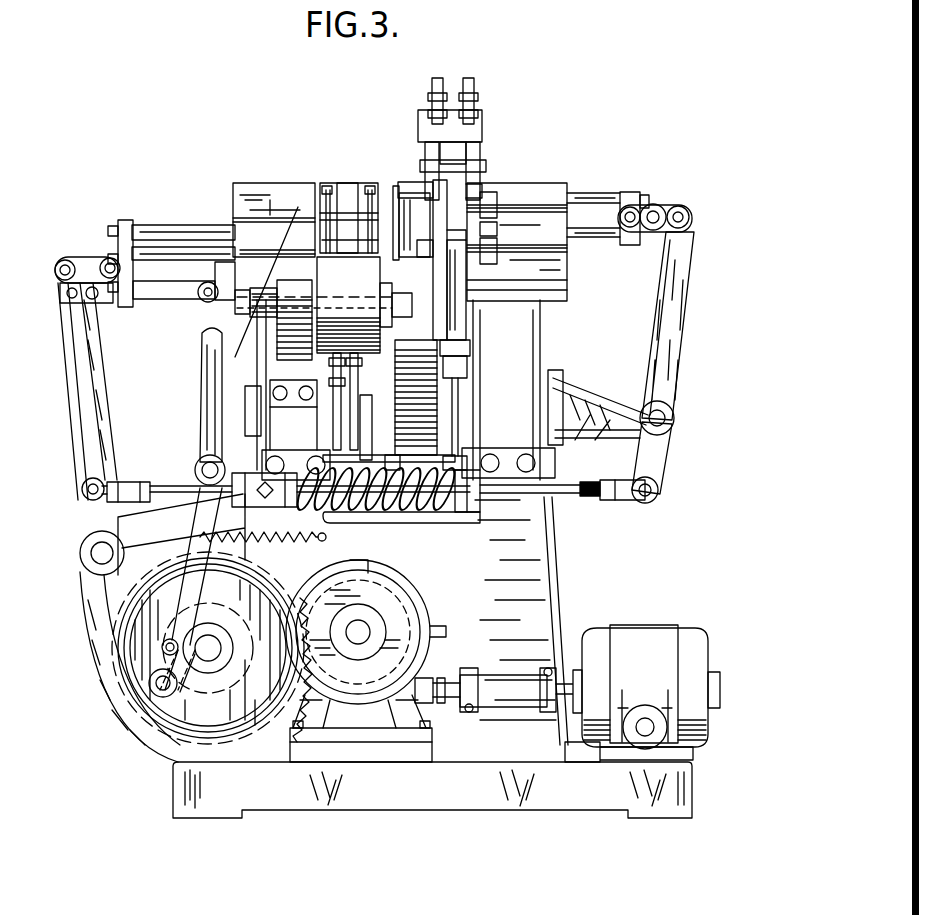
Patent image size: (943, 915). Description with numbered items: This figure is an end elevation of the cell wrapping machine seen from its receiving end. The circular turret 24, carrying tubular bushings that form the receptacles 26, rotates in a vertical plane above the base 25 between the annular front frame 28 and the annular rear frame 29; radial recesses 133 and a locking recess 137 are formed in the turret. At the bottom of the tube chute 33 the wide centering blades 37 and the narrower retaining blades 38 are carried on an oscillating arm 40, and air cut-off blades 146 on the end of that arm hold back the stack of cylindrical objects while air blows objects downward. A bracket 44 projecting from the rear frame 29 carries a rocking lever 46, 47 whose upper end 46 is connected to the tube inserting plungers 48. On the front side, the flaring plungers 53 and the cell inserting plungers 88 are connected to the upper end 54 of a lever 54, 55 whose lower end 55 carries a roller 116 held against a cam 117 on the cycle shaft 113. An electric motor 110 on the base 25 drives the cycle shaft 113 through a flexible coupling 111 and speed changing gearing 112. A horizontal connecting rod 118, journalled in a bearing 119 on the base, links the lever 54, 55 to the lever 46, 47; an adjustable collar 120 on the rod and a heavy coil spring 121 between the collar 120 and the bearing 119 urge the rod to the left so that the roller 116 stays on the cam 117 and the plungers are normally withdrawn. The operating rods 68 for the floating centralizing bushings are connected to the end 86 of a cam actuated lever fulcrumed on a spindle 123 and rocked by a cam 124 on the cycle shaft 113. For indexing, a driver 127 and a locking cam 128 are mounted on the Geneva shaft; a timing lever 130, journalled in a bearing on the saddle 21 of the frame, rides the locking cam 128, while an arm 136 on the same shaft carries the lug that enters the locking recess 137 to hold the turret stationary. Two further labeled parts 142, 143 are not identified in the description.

The saddle 21 is at (418, 516).
The turret 24 is at (410, 183).
The base 25 is at (488, 766).
The receptacles 26 is at (381, 337).
The annular front frame 28 is at (293, 410).
The annular rear frame 29 is at (518, 343).
The tube chute 33 is at (455, 118).
The centering blades 37 is at (480, 233).
The retaining blades 38 is at (477, 205).
The arm 40 is at (453, 320).
The bracket 44 is at (598, 397).
The upper end of rocking lever 46 is at (668, 352).
The rocking lever 47 is at (664, 464).
The tube inserting plungers 48 is at (605, 200).
The flaring plungers 53 is at (198, 250).
The upper end of rocking lever 54 is at (80, 394).
The lower end of rocking lever 55 is at (102, 613).
The operating rods 68 is at (252, 306).
The end of cam actuated lever 86 is at (205, 391).
The cell inserting plungers 88 is at (150, 290).
The electric motor 110 is at (648, 652).
The flexible coupling 111 is at (512, 692).
The speed changing gearing 112 is at (405, 680).
The cycle shaft 113 is at (212, 648).
The roller 116 is at (134, 716).
The cam 117 is at (150, 735).
The connecting rod 118 is at (176, 476).
The bearing 119 is at (471, 515).
The adjustable collar 120 is at (255, 477).
The coil spring 121 is at (358, 512).
The spindle 123 is at (202, 460).
The cam 124 is at (182, 748).
The driver 127 is at (386, 386).
The locking cam 128 is at (368, 404).
The timing lever 130 is at (366, 464).
The radial recesses 133 is at (403, 190).
The arm 136 is at (440, 472).
The locking recess 137 is at (417, 247).
The rod 142 is at (460, 428).
The bracket 143 is at (322, 452).
The blades 146 is at (350, 210).